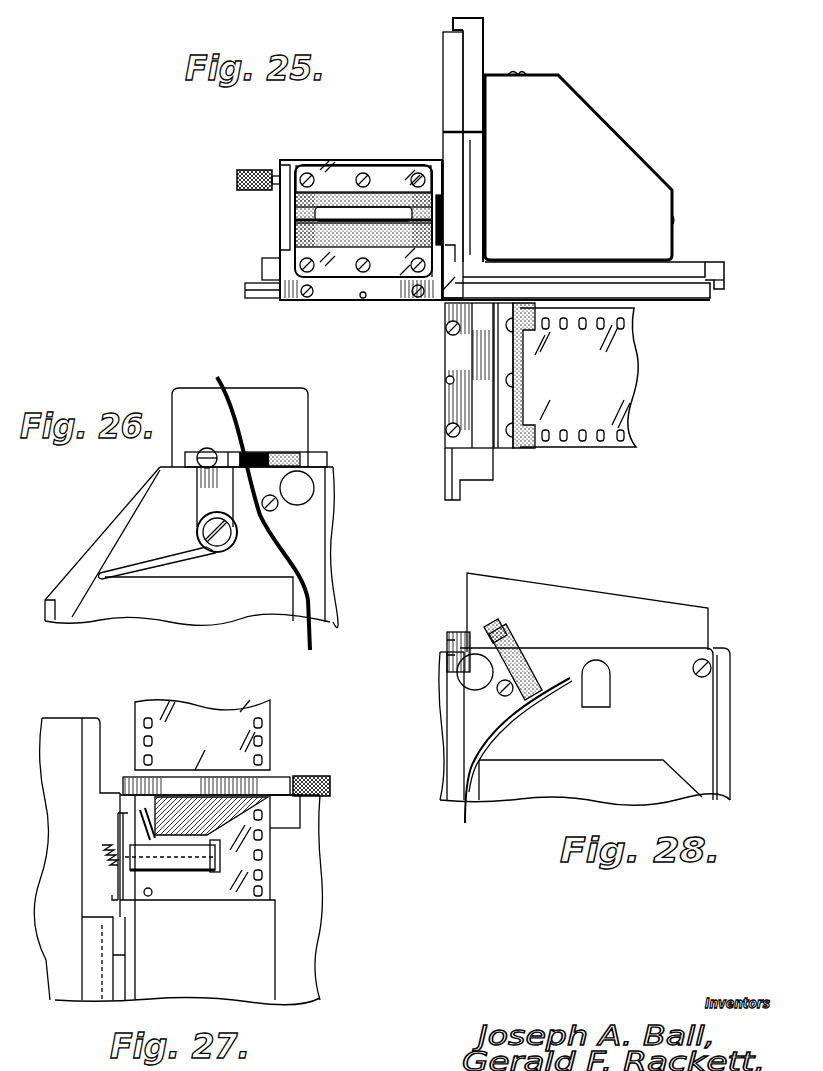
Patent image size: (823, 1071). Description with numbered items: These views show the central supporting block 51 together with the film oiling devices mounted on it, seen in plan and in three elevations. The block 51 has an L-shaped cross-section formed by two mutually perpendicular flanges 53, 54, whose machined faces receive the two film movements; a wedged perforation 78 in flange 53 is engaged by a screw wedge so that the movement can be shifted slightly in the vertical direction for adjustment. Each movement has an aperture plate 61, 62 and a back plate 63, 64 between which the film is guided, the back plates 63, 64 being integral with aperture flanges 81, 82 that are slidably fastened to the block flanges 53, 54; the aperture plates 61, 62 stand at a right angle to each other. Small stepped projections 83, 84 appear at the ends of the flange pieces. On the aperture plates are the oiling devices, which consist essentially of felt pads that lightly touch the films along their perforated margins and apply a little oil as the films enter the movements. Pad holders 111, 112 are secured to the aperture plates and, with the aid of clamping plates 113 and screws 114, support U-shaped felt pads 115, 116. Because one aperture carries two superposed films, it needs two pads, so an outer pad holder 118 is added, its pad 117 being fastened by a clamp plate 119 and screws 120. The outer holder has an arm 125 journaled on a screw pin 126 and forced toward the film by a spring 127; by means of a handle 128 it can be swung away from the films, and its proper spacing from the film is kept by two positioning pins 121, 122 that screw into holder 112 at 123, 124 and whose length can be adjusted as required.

In FIG. 26, the central supporting block 51 is at (245, 402).
In FIG. 27, the central supporting block 51 is at (55, 728).
In FIG. 28, the central supporting block 51 is at (596, 598).
In FIG. 25, the flange 53 is at (715, 266).
In FIG. 25, the flange 54 is at (475, 37).
In FIG. 25, the aperture plate 61 is at (258, 293).
In FIG. 26, the aperture plate 61 is at (318, 606).
In FIG. 25, the aperture plate 62 is at (456, 492).
In FIG. 28, the aperture plate 62 is at (456, 780).
In FIG. 26, the back plate 63 is at (302, 600).
In FIG. 28, the back plate 64 is at (472, 787).
In FIG. 28, the wedged perforation 78 is at (600, 683).
In FIG. 25, the aperture flange 81 is at (690, 296).
In FIG. 25, the aperture flange 82 is at (443, 70).
In FIG. 25, the hook tab 83 is at (725, 275).
In FIG. 25, the top cap 84 is at (455, 22).
In FIG. 25, the pad holder 111 is at (460, 396).
In FIG. 28, the pad holder 111 is at (446, 646).
In FIG. 25, the pad holder 112 is at (402, 300).
In FIG. 26, the pad holder 112 is at (327, 462).
In FIG. 25, the clamping plate 113 is at (510, 448).
In FIG. 28, the clamping plate 113 is at (508, 630).
In FIG. 25, the screw 114 is at (535, 449).
In FIG. 28, the screw 114 is at (518, 645).
In FIG. 25, the U-shaped felt pad 115 is at (540, 428).
In FIG. 28, the U-shaped felt pad 115 is at (540, 683).
In FIG. 25, the U-shaped felt pad 116 is at (290, 233).
In FIG. 26, the U-shaped felt pad 116 is at (262, 452).
In FIG. 25, the pad 117 is at (281, 200).
In FIG. 26, the pad 117 is at (241, 452).
In FIG. 25, the outer pad holder 118 is at (290, 168).
In FIG. 27, the outer pad holder 118 is at (275, 785).
In FIG. 25, the clamp plate 119 is at (341, 177).
In FIG. 25, the screw 120 is at (388, 177).
In FIG. 25, the positioning pin 121 is at (446, 215).
In FIG. 25, the positioning pin 122 is at (287, 213).
In FIG. 26, the positioning pin 122 is at (250, 452).
In FIG. 25, the threaded location 123 is at (447, 255).
In FIG. 25, the threaded location 124 is at (272, 265).
In FIG. 26, the arm 125 is at (202, 494).
In FIG. 27, the arm 125 is at (221, 850).
In FIG. 26, the screw pin 126 is at (237, 537).
In FIG. 27, the screw pin 126 is at (212, 878).
In FIG. 26, the spring 127 is at (166, 560).
In FIG. 27, the spring 127 is at (118, 816).
In FIG. 25, the handle 128 is at (266, 150).
In FIG. 26, the handle 128 is at (185, 460).
In FIG. 27, the handle 128 is at (332, 786).